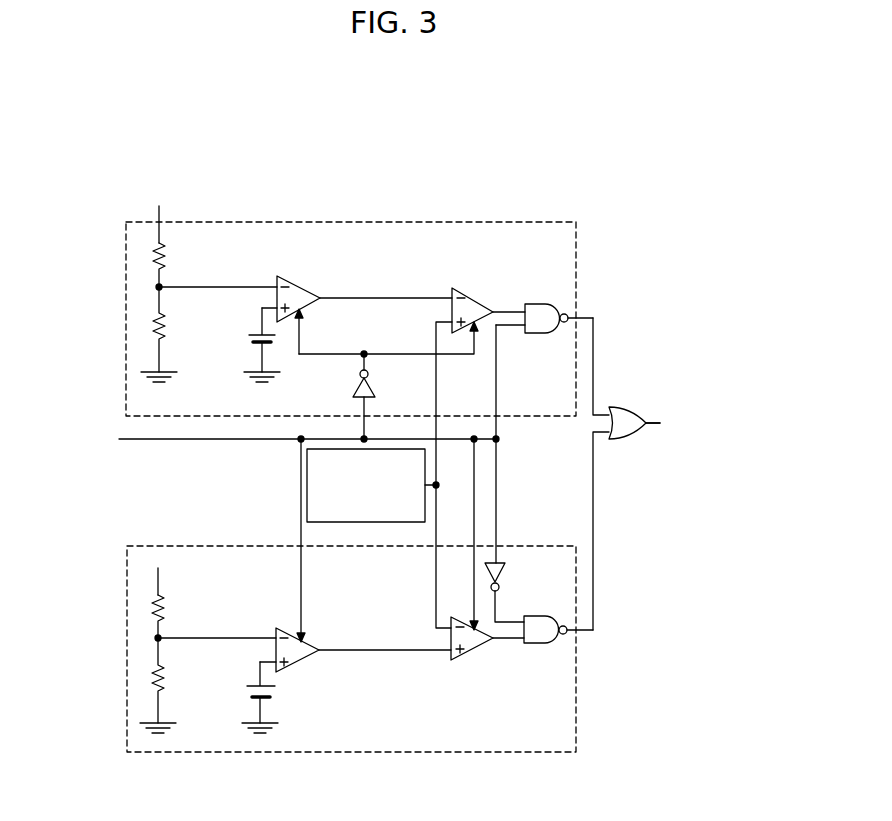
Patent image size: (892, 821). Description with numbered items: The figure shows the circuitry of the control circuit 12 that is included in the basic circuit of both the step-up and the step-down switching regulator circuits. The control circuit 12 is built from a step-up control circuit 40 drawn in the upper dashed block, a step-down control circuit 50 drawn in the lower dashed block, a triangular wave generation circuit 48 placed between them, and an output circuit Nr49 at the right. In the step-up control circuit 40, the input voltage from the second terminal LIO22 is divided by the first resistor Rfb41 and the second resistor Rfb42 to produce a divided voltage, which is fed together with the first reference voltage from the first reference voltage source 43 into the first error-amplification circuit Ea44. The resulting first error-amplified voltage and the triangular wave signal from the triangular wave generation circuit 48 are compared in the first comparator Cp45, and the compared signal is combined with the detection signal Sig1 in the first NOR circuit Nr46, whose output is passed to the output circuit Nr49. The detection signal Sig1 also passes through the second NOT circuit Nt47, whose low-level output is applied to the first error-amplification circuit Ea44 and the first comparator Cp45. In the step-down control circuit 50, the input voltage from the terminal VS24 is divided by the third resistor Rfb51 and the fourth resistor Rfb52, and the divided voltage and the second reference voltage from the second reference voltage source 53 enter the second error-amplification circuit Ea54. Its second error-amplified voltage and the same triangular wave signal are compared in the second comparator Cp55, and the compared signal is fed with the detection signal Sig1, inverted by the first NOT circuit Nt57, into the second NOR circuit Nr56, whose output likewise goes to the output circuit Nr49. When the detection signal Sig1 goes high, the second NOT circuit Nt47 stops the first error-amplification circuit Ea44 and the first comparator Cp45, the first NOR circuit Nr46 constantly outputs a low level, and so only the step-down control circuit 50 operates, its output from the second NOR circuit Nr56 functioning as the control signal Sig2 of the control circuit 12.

The control circuit 12 is at (433, 157).
The step-up control circuit 40 is at (495, 221).
The first resistor Rfb41 is at (166, 253).
The second resistor Rfb42 is at (166, 328).
The first reference voltage source 43 is at (241, 342).
The first error-amplification circuit Ea44 is at (304, 273).
The first comparator Cp45 is at (479, 286).
The first NOR circuit Nr46 is at (540, 303).
The second NOT circuit Nt47 is at (353, 388).
The triangular wave generation circuit 48 is at (404, 523).
The output circuit Nr49 is at (617, 407).
The step-down control circuit 50 is at (497, 753).
The third resistor Rfb51 is at (165, 605).
The fourth resistor Rfb52 is at (165, 682).
The second reference voltage source 53 is at (241, 696).
The second error-amplification circuit Ea54 is at (295, 666).
The second comparator Cp55 is at (478, 654).
The second NOR circuit Nr56 is at (538, 646).
The first NOT circuit Nt57 is at (506, 573).
The second terminal LIO22 is at (159, 214).
The terminal VS24 is at (158, 571).
The detection signal Sig1 is at (291, 440).
The control signal Sig2 is at (672, 423).